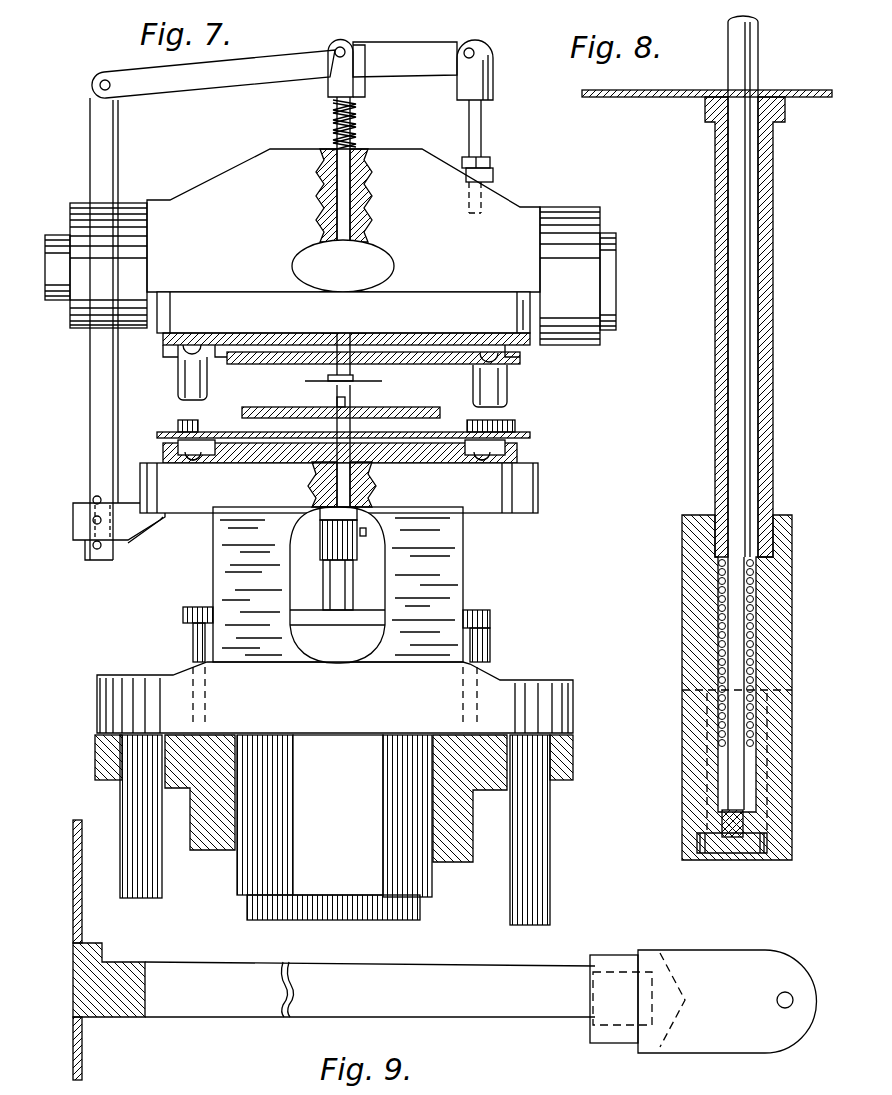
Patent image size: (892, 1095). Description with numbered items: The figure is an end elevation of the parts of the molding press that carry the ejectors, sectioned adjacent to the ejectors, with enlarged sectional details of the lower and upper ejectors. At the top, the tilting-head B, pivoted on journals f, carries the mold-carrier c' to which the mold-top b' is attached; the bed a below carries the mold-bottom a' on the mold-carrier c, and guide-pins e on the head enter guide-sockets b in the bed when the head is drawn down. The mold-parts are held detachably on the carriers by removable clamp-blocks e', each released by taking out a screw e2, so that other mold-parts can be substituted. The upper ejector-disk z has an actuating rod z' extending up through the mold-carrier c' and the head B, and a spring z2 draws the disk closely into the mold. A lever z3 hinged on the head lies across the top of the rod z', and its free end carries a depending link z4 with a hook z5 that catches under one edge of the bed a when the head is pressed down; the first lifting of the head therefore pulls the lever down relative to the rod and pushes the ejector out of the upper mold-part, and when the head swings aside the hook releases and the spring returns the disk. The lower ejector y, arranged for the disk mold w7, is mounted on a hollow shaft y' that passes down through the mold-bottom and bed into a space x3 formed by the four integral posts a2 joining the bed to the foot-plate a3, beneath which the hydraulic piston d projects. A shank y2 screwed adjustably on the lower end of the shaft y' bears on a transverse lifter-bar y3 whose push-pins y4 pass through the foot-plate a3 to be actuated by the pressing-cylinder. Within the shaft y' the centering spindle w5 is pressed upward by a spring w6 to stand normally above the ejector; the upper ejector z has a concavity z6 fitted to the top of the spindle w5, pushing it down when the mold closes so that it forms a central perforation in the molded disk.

In FIG. 7, the lever z3 is at (292, 127).
In FIG. 7, the spring z2 is at (367, 125).
In FIG. 7, the depending link z4 is at (90, 393).
In FIG. 7, the hook z5 is at (125, 526).
In FIG. 7, the tilting-head B is at (343, 220).
In FIG. 7, the journals f is at (130, 205).
In FIG. 7, the upper ejector-disk z is at (358, 245).
In FIG. 9, the upper ejector-disk z is at (62, 950).
In FIG. 7, the actuating rod z' is at (343, 266).
In FIG. 9, the actuating rod z' is at (481, 993).
In FIG. 7, the mold-carrier c' is at (343, 318).
In FIG. 7, the mold-top b' is at (341, 371).
In FIG. 7, the clamp-block e' is at (340, 396).
In FIG. 7, the screw e2 is at (195, 348).
In FIG. 7, the guide-pins e is at (344, 382).
In FIG. 7, the mold for molding disks w7 is at (410, 410).
In FIG. 7, the centering spindle w5 is at (337, 401).
In FIG. 8, the centering spindle w5 is at (760, 58).
In FIG. 7, the mold-bottom a' is at (350, 421).
In FIG. 7, the guide-sockets b is at (361, 450).
In FIG. 7, the mold-carrier c is at (339, 449).
In FIG. 7, the bed a is at (391, 570).
In FIG. 7, the posts or columns a2 is at (213, 580).
In FIG. 7, the space x3 is at (370, 568).
In FIG. 7, the shank y2 is at (320, 592).
In FIG. 8, the shank y2 is at (683, 727).
In FIG. 7, the lifter-bar y3 is at (183, 612).
In FIG. 7, the push-pins y4 is at (193, 650).
In FIG. 7, the foot-plate a3 is at (513, 683).
In FIG. 7, the hydraulic piston d is at (334, 830).
In FIG. 9, the concavity z6 is at (72, 985).
In FIG. 8, the ejector y is at (707, 106).
In FIG. 8, the hollow shaft y' is at (754, 327).
In FIG. 8, the spring w6 is at (722, 612).